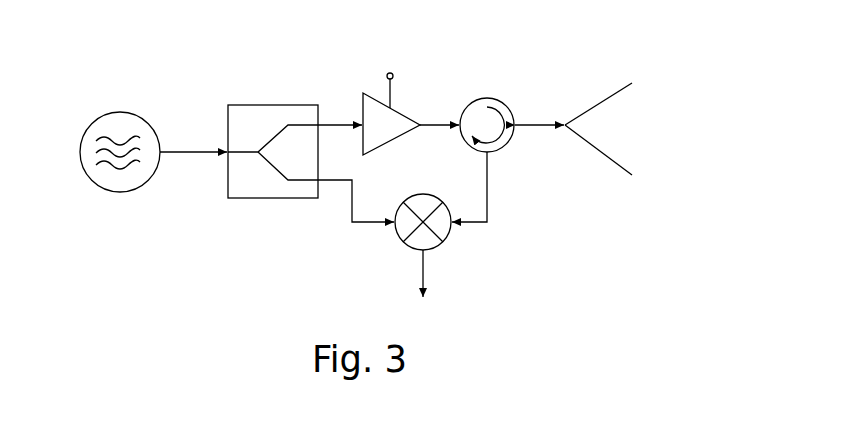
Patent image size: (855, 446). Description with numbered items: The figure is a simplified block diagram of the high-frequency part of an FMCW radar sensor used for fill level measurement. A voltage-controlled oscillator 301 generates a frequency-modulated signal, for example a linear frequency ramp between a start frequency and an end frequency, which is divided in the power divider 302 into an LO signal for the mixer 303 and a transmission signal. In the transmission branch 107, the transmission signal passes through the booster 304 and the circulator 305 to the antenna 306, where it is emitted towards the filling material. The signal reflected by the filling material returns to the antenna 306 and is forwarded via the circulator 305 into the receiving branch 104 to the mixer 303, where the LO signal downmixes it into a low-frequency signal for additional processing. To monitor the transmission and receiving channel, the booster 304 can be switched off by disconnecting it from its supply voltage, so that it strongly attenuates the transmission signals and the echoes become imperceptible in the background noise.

The voltage-controlled oscillator 301 is at (120, 110).
The power divider 302 is at (232, 200).
The transmission branch 107 is at (316, 74).
The booster 304 is at (372, 94).
The circulator 305 is at (487, 97).
The antenna 306 is at (600, 102).
The receiving branch 104 is at (344, 232).
The mixer 303 is at (428, 238).